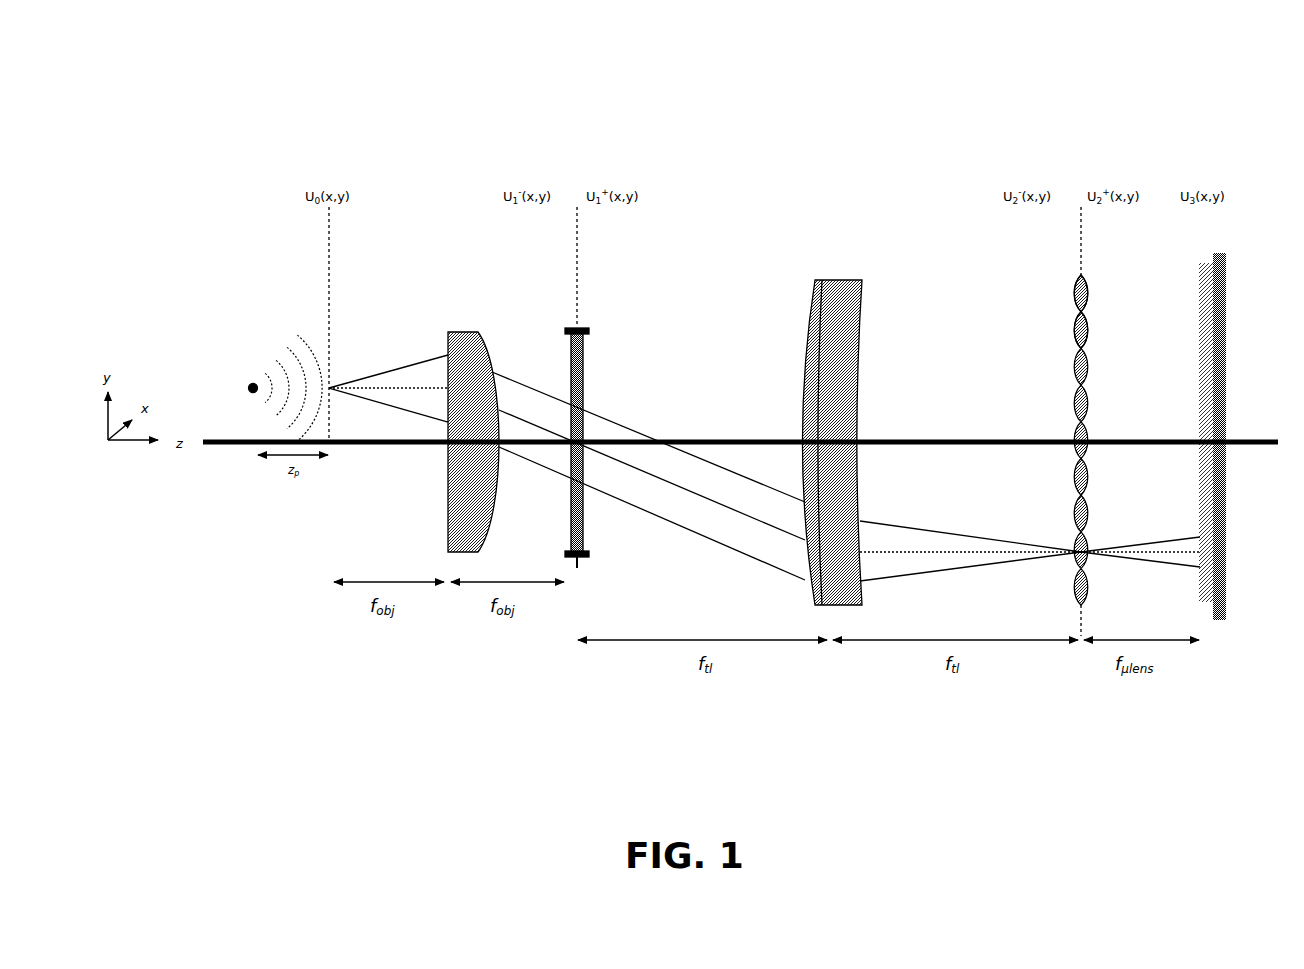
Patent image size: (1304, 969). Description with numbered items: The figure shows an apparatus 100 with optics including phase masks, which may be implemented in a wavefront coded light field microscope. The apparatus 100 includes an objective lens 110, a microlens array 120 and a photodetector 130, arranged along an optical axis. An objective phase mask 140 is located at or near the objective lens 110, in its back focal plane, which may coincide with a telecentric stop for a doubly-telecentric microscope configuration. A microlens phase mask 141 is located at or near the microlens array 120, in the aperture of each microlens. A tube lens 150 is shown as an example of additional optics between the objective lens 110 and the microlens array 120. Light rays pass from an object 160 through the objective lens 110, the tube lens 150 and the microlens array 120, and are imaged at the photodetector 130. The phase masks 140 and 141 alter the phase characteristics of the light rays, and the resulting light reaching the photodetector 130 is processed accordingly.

The apparatus 100 is at (1171, 42).
The objective lens 110 is at (470, 332).
The microlens array 120 is at (1086, 280).
The photodetector 130 is at (1220, 262).
The objective phase mask 140 is at (585, 365).
The microlens phase mask 141 is at (1088, 322).
The tube lens 150 is at (860, 284).
The object 160 is at (250, 394).